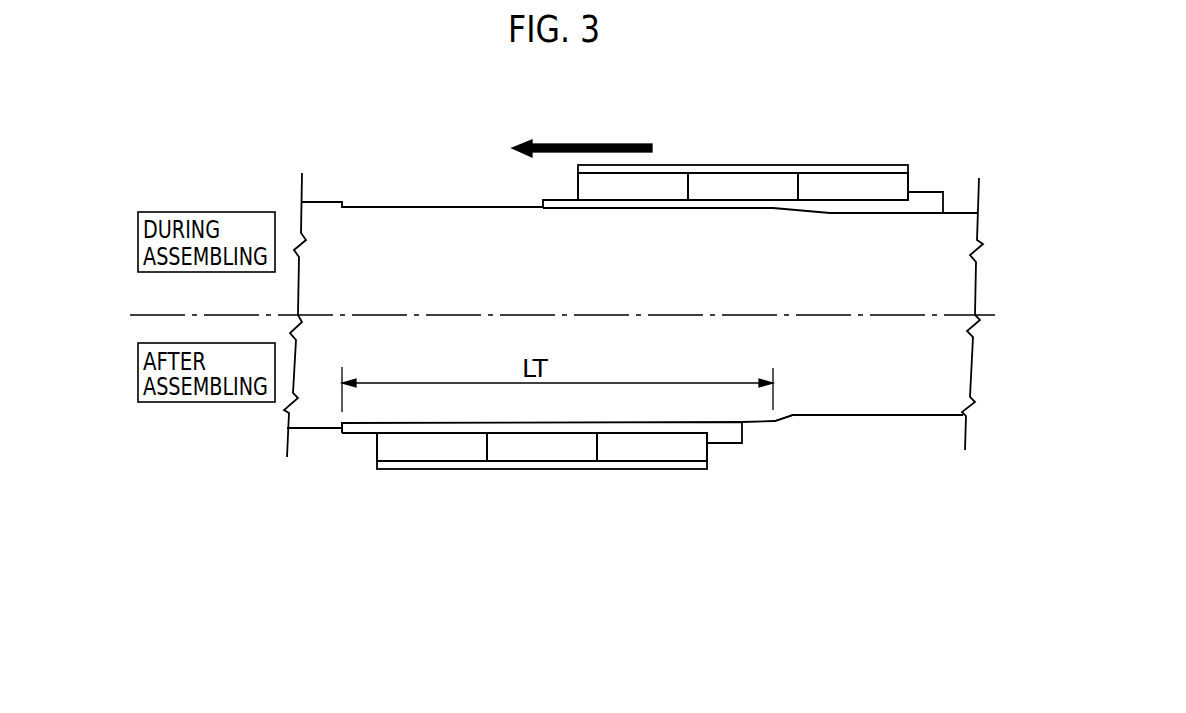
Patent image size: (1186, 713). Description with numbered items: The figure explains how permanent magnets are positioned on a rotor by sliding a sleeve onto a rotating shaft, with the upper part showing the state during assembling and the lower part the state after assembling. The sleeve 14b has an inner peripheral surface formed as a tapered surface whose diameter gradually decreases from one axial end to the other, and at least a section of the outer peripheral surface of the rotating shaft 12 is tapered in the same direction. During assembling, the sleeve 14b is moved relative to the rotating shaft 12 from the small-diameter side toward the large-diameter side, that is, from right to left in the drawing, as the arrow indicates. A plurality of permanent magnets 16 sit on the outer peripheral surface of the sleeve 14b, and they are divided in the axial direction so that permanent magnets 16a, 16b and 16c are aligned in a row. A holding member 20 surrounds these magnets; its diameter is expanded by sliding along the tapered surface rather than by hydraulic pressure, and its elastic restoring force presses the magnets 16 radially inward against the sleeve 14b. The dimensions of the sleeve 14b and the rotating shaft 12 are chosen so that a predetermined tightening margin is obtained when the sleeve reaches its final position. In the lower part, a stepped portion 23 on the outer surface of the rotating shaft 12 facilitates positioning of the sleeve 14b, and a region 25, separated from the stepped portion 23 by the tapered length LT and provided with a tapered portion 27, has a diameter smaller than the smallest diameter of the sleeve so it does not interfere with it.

The rotating shaft 12 is at (394, 233).
The sleeve 14b is at (925, 194).
The permanent magnets 16 is at (642, 311).
The permanent magnet 16a is at (658, 187).
The permanent magnet 16b is at (752, 187).
The permanent magnet 16c is at (650, 93).
The holding member 20 is at (875, 162).
The stepped portion 23 is at (336, 449).
The region 25 is at (890, 436).
The tapered portion 27 is at (785, 422).